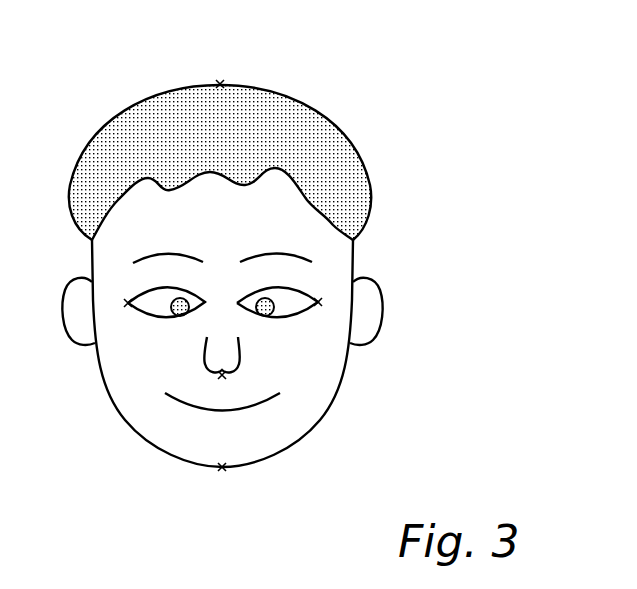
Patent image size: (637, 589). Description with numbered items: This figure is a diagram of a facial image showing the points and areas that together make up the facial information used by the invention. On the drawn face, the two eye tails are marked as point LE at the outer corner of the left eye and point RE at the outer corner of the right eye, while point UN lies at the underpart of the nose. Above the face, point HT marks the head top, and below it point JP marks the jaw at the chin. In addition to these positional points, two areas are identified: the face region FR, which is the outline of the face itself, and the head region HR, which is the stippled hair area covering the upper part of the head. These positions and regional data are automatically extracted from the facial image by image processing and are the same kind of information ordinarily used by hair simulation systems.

The head top HT is at (220, 78).
The head region HR is at (320, 161).
The left eye tail LE is at (124, 311).
The right eye tail RE is at (323, 312).
The underpart of nose UN is at (214, 380).
The face region FR is at (309, 379).
The jaw JP is at (234, 473).